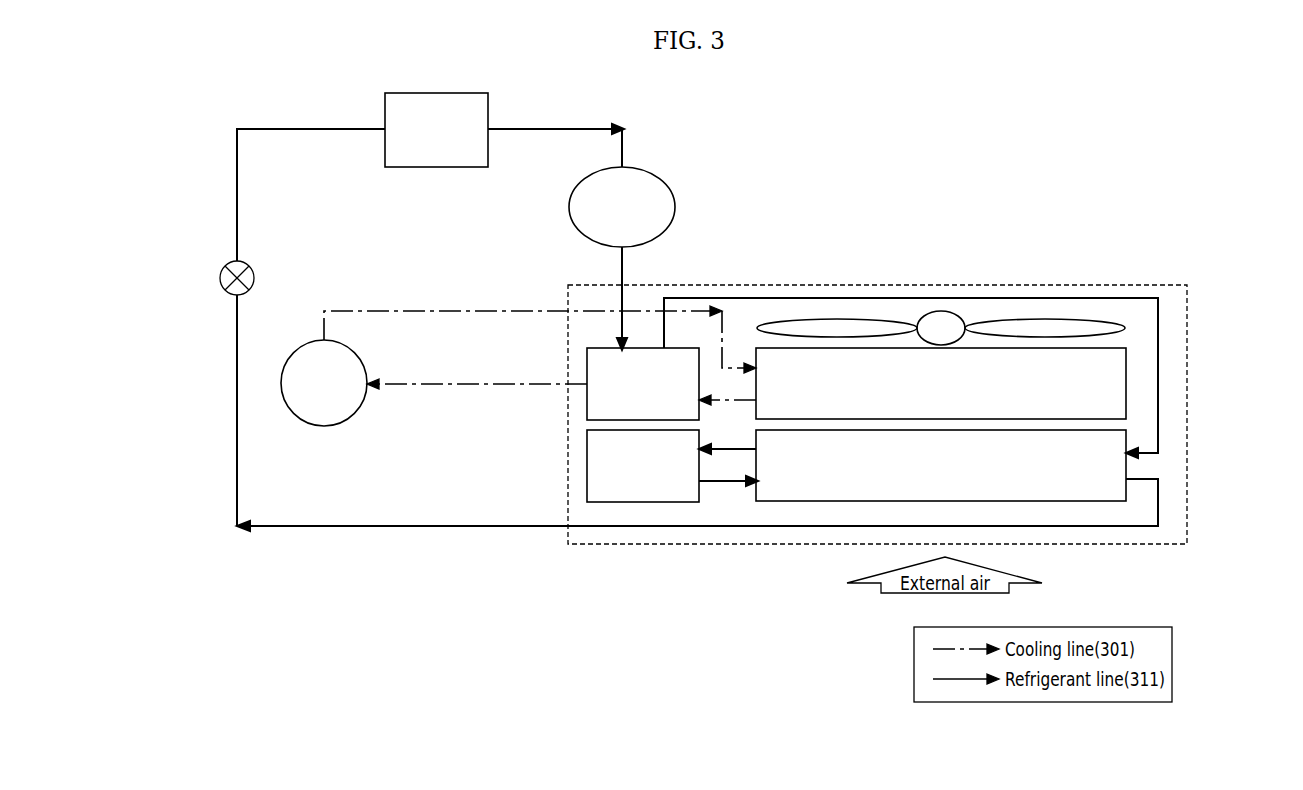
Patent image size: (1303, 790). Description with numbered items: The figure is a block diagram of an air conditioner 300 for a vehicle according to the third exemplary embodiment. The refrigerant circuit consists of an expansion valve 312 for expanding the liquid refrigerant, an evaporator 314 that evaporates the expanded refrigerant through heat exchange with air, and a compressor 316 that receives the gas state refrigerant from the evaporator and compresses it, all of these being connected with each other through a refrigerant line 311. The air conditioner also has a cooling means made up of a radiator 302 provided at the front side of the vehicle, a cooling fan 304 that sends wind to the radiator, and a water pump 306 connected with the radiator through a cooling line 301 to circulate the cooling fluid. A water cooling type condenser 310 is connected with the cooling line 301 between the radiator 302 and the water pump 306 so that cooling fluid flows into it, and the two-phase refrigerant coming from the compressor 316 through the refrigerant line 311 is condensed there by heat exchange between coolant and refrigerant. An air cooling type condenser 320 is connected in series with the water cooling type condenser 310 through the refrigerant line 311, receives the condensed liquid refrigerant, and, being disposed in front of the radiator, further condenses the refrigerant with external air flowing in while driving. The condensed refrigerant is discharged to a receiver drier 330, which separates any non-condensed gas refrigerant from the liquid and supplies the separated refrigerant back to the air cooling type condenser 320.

The air conditioner 300 is at (780, 90).
The cooling line 301 is at (431, 310).
The radiator 302 is at (1126, 387).
The cooling fan 304 is at (940, 311).
The water pump 306 is at (323, 426).
The water cooling type condenser 310 is at (587, 403).
The refrigerant line 311 is at (1158, 332).
The expansion valve 312 is at (220, 279).
The evaporator 314 is at (436, 93).
The compressor 316 is at (675, 207).
The air cooling type condenser 320 is at (797, 502).
The receiver drier 330 is at (587, 465).